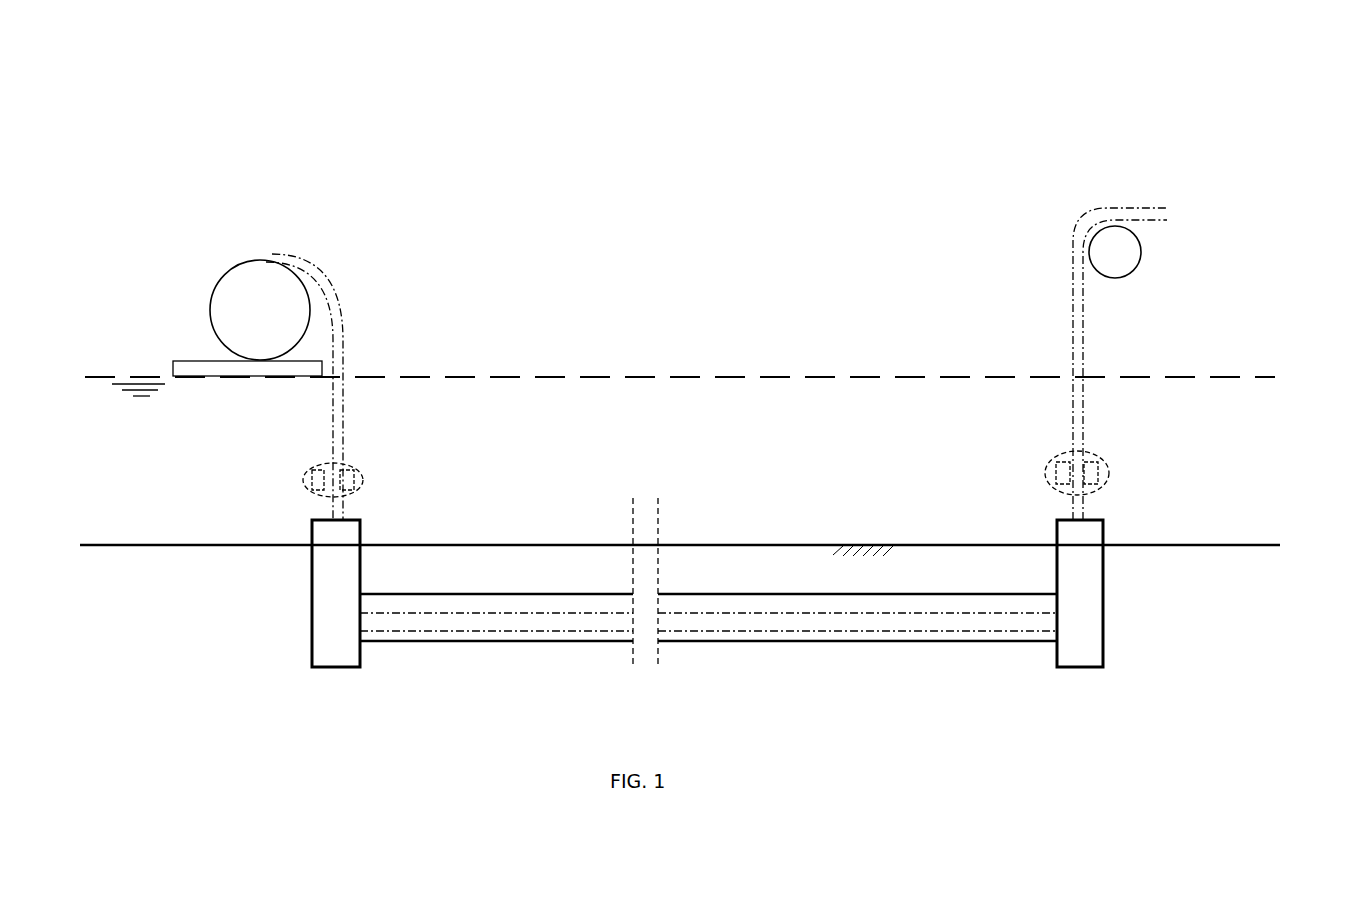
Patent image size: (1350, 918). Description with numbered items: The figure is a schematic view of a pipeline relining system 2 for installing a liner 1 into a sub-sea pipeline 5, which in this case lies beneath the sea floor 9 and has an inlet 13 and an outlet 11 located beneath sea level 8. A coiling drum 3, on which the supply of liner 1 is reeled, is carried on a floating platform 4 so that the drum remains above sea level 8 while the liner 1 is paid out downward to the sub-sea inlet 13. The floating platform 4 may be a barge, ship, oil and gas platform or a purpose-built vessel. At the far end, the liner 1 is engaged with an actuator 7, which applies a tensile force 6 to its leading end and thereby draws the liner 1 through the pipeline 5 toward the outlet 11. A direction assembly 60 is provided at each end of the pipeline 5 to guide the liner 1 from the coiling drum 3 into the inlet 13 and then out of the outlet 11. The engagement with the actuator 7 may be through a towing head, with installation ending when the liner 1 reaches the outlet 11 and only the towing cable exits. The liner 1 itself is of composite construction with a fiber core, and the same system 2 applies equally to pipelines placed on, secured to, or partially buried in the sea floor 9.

The liner 1 is at (341, 440).
The pipeline relining system 2 is at (938, 103).
The coiling drum 3 is at (236, 268).
The floating platform 4 is at (195, 362).
The pipeline 5 is at (495, 643).
The tensile force 6 is at (1170, 214).
The actuator 7 is at (1136, 269).
The sea level 8 is at (468, 375).
The sea floor 9 is at (728, 543).
The outlet 11 is at (1056, 519).
The inlet 13 is at (362, 521).
The direction assembly 60 is at (303, 480).